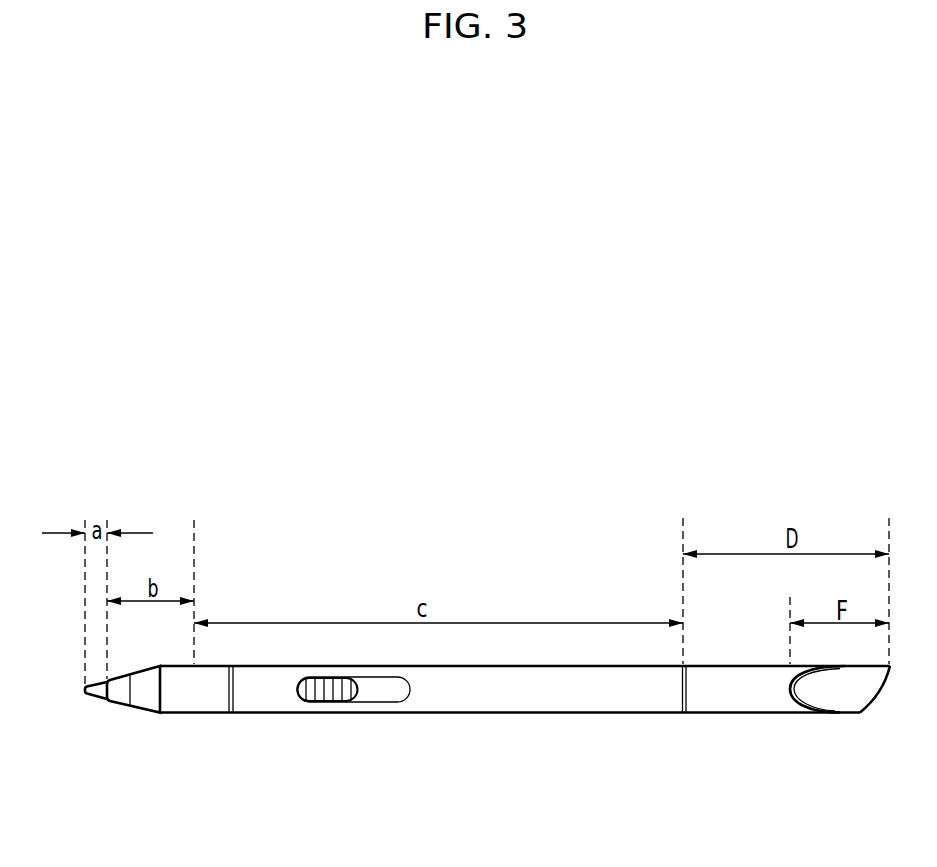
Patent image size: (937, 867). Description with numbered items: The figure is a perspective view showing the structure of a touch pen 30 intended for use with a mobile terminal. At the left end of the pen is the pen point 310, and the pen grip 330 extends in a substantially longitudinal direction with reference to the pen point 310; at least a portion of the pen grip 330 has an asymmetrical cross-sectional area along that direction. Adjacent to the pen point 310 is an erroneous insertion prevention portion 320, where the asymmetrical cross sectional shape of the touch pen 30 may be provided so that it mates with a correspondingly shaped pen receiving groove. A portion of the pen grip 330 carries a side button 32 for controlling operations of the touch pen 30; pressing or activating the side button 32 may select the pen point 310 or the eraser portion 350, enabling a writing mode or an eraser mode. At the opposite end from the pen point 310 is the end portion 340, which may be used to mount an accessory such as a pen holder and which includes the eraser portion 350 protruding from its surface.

The touch pen 30 is at (571, 538).
The pen point 310 is at (97, 697).
The erroneous insertion prevention portion 320 is at (197, 714).
The side button 32 is at (323, 694).
The pen grip 330 is at (487, 715).
The end portion 340 is at (738, 714).
The eraser portion 350 is at (848, 706).